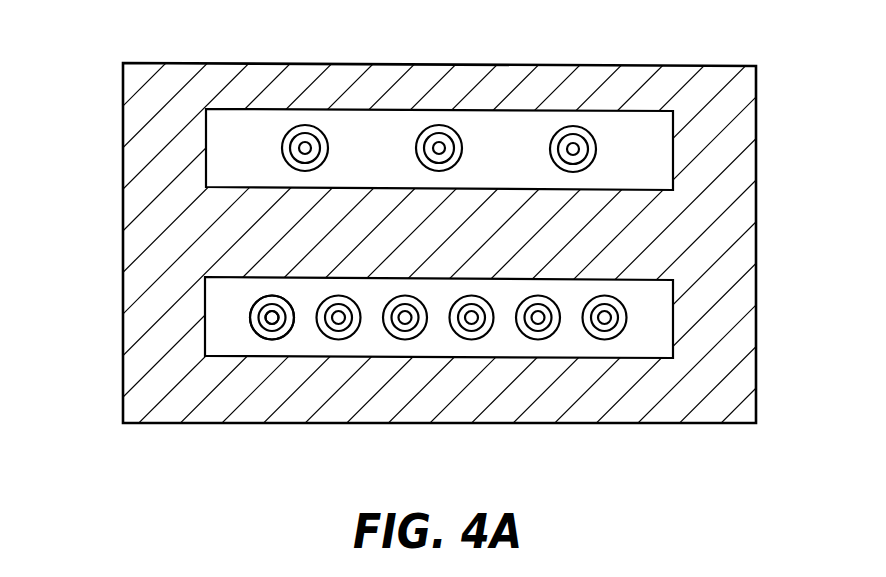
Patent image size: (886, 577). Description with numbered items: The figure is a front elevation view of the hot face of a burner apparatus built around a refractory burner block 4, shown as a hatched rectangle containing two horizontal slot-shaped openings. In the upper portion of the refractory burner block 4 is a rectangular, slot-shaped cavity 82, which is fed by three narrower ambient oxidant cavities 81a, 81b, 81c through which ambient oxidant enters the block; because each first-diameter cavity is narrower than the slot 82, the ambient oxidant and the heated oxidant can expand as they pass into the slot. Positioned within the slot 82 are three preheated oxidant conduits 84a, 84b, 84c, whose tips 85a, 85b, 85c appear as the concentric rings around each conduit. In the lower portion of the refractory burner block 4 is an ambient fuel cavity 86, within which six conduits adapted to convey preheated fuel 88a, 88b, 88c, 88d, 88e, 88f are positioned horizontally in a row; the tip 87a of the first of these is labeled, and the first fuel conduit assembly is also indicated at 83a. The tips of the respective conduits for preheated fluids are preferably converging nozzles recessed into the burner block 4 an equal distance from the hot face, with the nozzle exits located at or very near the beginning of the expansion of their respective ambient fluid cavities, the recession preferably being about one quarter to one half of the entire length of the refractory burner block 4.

The refractory burner block 4 is at (756, 143).
The slot 82 is at (230, 108).
The ambient fuel cavity 86 is at (673, 338).
The outer contact shell 83a is at (250, 300).
The tip 87a is at (258, 320).
The ambient oxidant cavity 81a is at (288, 133).
The tip of preheated oxidant conduit 85a is at (314, 142).
The preheated oxidant conduit 84a is at (303, 142).
The ambient oxidant cavity 81b is at (422, 133).
The tip of preheated oxidant conduit 85b is at (448, 142).
The preheated oxidant conduit 84b is at (437, 142).
The ambient oxidant cavity 81c is at (556, 134).
The tip of preheated oxidant conduit 85c is at (582, 143).
The preheated oxidant conduit 84c is at (571, 143).
The preheated fuel conduit 88a is at (280, 326).
The preheated fuel conduit 88b is at (346, 326).
The preheated fuel conduit 88c is at (413, 326).
The preheated fuel conduit 88d is at (480, 326).
The preheated fuel conduit 88e is at (546, 326).
The preheated fuel conduit 88f is at (612, 326).